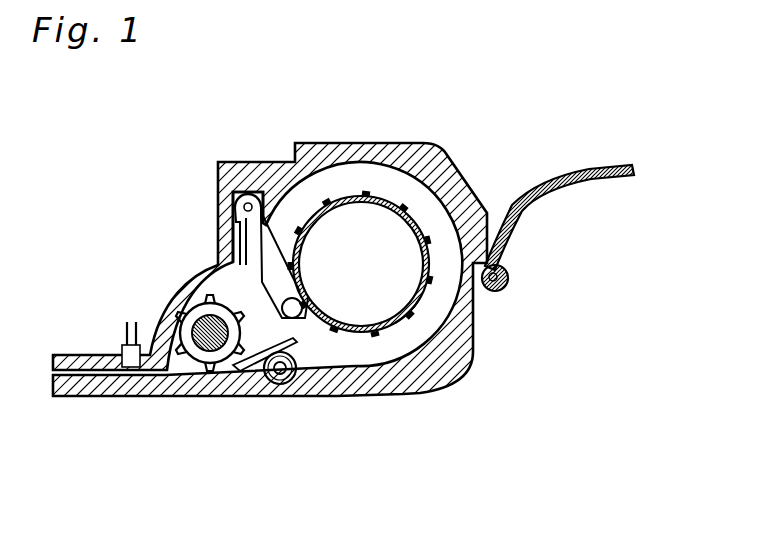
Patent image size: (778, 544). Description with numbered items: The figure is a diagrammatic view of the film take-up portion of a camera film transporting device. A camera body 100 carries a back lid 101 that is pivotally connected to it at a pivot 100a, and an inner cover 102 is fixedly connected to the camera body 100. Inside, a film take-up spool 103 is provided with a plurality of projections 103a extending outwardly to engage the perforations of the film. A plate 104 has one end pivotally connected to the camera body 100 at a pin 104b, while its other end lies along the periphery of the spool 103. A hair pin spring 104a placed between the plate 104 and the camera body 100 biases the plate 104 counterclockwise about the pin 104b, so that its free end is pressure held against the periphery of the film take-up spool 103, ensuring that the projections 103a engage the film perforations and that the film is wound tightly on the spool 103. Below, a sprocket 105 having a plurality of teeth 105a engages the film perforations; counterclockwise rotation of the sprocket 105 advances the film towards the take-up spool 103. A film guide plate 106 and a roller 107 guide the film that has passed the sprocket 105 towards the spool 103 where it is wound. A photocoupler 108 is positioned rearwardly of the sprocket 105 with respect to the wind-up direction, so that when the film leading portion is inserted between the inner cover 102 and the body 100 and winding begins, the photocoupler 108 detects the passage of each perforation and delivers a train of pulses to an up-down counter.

The camera body 100 is at (237, 160).
The pivot of back lid 100a is at (508, 283).
The back lid 101 is at (584, 184).
The inner cover 102 is at (401, 378).
The film take-up spool 103 is at (387, 205).
The projections 103a is at (405, 315).
The plate 104 is at (250, 245).
The hair pin spring 104a is at (229, 226).
The pin 104b is at (257, 190).
The sprocket 105 is at (232, 366).
The teeth 105a is at (202, 375).
The film guide plate 106 is at (258, 358).
The roller 107 is at (293, 380).
The photocoupler 108 is at (120, 348).